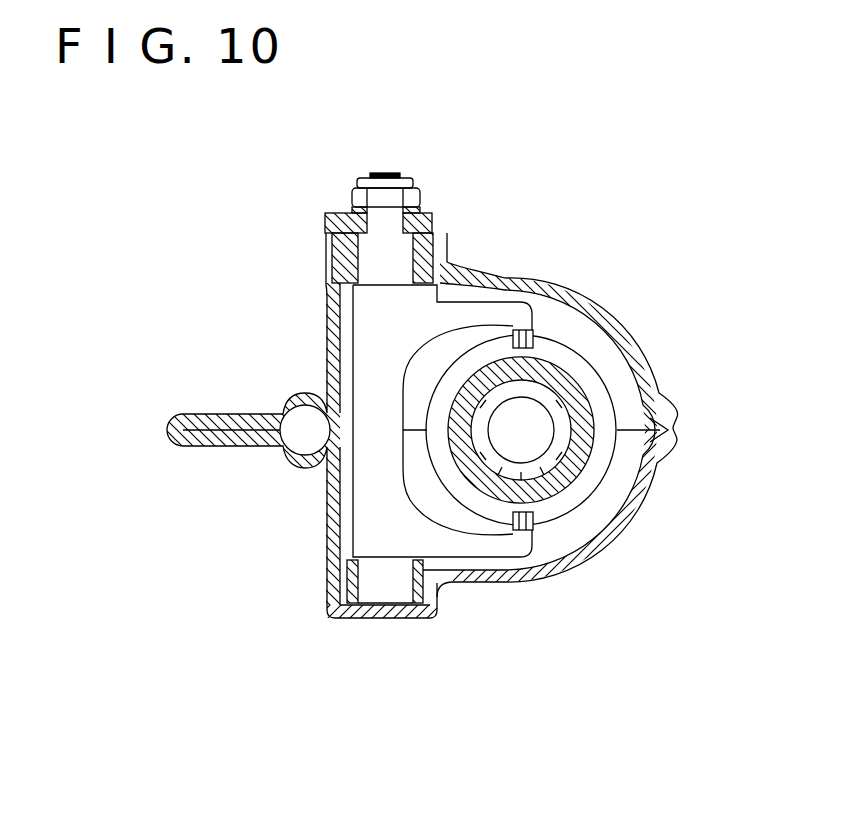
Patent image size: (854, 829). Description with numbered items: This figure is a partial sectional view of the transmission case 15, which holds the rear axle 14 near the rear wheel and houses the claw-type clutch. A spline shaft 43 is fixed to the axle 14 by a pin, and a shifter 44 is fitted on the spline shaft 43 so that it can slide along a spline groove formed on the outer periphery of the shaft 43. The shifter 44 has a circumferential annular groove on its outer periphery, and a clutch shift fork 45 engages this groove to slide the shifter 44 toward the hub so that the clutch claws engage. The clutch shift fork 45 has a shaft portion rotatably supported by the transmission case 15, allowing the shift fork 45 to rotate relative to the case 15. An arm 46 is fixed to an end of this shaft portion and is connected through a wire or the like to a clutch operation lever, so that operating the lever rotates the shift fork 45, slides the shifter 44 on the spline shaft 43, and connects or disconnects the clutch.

The rear axle 14 is at (525, 419).
The transmission case 15 is at (620, 297).
The spline shaft 43 is at (572, 420).
The shifter 44 is at (575, 460).
The clutch shift fork 45 is at (412, 350).
The arm 46 is at (433, 213).